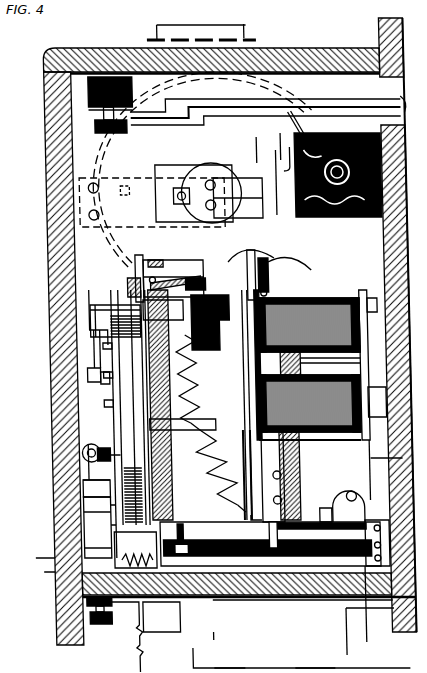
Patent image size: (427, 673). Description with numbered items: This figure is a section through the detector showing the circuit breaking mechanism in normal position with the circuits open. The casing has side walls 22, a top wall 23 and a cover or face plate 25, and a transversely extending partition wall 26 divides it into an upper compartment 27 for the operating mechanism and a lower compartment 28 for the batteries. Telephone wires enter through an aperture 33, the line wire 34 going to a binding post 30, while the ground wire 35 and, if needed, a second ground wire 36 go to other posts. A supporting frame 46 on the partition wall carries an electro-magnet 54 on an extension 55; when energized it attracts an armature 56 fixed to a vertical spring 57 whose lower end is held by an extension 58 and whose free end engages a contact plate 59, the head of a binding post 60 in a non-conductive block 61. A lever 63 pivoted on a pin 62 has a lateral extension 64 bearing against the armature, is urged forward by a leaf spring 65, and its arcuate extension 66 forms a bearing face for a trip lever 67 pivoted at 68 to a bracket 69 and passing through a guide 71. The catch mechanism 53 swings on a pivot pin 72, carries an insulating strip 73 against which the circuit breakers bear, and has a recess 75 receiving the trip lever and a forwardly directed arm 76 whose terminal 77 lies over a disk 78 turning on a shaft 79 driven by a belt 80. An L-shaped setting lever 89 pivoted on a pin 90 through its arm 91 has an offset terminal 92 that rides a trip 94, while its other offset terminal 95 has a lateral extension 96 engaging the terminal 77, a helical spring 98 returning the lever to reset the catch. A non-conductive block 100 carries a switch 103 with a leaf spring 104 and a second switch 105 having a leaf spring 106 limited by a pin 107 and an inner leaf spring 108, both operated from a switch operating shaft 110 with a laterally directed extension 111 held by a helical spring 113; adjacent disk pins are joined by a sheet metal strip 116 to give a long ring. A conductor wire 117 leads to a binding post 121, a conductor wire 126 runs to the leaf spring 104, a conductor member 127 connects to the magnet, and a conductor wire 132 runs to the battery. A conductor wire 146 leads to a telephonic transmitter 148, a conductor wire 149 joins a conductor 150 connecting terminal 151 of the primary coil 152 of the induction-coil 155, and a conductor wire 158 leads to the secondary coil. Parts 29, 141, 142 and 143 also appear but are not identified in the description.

The side walls 22 is at (327, 98).
The top wall 23 is at (310, 33).
The cover or face plate 25 is at (46, 308).
The partition wall 26 is at (289, 596).
The upper compartment 27 is at (356, 296).
The lower compartment 28 is at (249, 594).
The terminal block 29 is at (86, 88).
The binding post 30 is at (116, 131).
The aperture 33 is at (403, 108).
The line wire 34 is at (277, 98).
The ground wire 35 is at (294, 106).
The second ground wire 36 is at (244, 115).
The supporting frame 46 is at (316, 296).
The catch mechanism 53 is at (270, 252).
The electro-magnet 54 is at (338, 298).
The inwardly directed extension 55 is at (298, 671).
The armature 56 is at (262, 268).
The spring 57 is at (207, 484).
The inwardly directed extension 58 is at (253, 480).
The contact plate 59 is at (262, 292).
The binding post 60 is at (178, 318).
The block 61 is at (196, 382).
The pin 62 is at (300, 436).
The lever 63 is at (196, 400).
The lateral extension 64 is at (283, 364).
The leaf spring 65 is at (291, 458).
The laterally directed extension 66 is at (247, 262).
The trip lever 67 is at (168, 265).
The pivot 68 is at (128, 277).
The bracket 69 is at (249, 207).
The guide 71 is at (208, 290).
The pivot pin 72 is at (308, 270).
The strip of non-conductive material 73 is at (232, 672).
The recess 75 is at (125, 304).
The arm 76 is at (108, 282).
The terminal 77 is at (90, 347).
The disk 78 is at (125, 423).
The shaft 79 is at (192, 452).
The belt 80 is at (83, 397).
The setting lever 89 is at (76, 440).
The pin 90 is at (72, 493).
The arm 91 is at (72, 512).
The offset terminal 92 is at (96, 524).
The trip 94 is at (97, 527).
The offset terminal 95 is at (96, 488).
The lateral extension 96 is at (85, 385).
The helical spring 98 is at (76, 460).
The block 100 is at (210, 522).
The switch 103 is at (168, 524).
The leaf spring 104 is at (228, 530).
The second switch 105 is at (310, 507).
The leaf spring 106 is at (345, 490).
The pin 107 is at (323, 511).
The leaf spring 108 is at (257, 531).
The switch operating shaft 110 is at (135, 550).
The laterally directed extension 111 is at (102, 541).
The helical spring 113 is at (136, 599).
The strip of sheet metal 116 is at (123, 658).
The conductor wire 117 is at (126, 658).
The binding post 121 is at (85, 626).
The conductor wire 126 is at (167, 618).
The conductor member 127 is at (203, 470).
The conductor wire 132 is at (197, 641).
The terminal board 141 is at (354, 642).
The bracket 142 is at (386, 443).
The core plate 143 is at (386, 362).
The conductor wire 146 is at (165, 215).
The telephonic transmitter 148 is at (154, 27).
The conductor wire 149 is at (229, 164).
The conductor 150 is at (253, 160).
The terminal 151 is at (297, 133).
The primary coil 152 is at (345, 128).
The induction-coil 155 is at (273, 208).
The conductor wire 158 is at (197, 167).